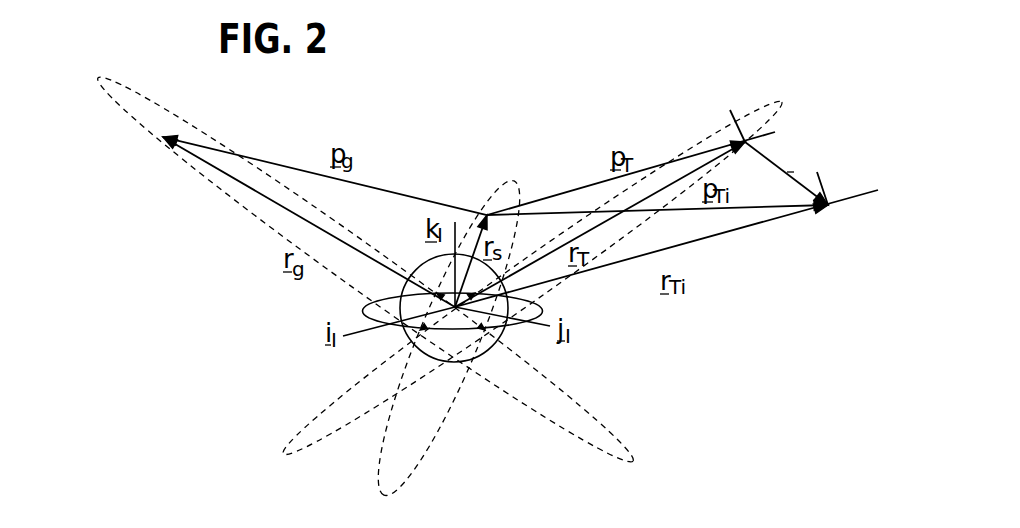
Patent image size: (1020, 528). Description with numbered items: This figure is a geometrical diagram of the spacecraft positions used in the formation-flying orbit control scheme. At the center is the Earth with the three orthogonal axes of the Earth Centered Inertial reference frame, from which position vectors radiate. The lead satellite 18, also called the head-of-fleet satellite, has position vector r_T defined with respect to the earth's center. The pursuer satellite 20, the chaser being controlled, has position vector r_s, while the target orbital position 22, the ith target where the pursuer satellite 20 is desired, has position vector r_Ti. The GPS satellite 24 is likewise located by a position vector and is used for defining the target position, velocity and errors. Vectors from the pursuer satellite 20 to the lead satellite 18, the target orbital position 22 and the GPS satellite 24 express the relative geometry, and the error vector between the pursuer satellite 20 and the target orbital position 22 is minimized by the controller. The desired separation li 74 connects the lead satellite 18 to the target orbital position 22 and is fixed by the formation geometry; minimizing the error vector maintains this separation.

The lead satellite 18 is at (697, 132).
The pursuer satellite 20 is at (468, 195).
The target orbital position 22 is at (843, 222).
The GPS satellite 24 is at (135, 162).
The desired separation li 74 is at (803, 160).